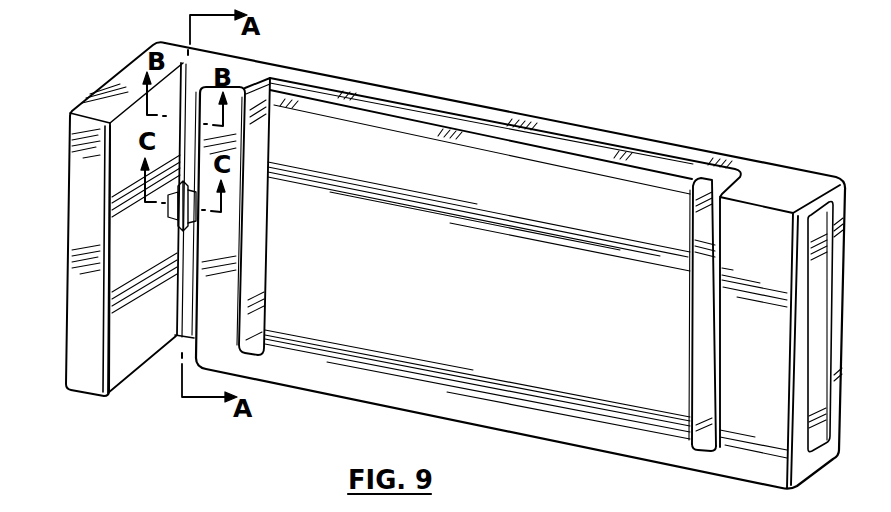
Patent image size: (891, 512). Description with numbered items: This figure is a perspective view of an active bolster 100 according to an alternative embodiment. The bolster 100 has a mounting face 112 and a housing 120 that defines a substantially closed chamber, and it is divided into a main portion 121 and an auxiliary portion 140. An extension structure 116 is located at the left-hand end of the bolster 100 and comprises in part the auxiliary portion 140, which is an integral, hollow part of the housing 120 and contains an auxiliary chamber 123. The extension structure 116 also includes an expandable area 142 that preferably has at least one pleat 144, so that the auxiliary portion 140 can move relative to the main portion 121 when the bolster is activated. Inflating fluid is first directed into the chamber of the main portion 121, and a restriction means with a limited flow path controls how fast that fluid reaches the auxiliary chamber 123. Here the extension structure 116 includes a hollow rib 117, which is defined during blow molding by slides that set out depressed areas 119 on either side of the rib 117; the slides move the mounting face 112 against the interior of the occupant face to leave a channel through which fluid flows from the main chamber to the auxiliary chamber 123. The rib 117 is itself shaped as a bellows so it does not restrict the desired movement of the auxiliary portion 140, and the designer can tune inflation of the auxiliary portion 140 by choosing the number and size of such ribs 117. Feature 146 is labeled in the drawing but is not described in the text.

The bolster 100 is at (567, 77).
The mounting face 112 is at (509, 314).
The extension structure 116 is at (165, 288).
The hollow rib 117 is at (193, 222).
The depressed areas 119 is at (194, 136).
The housing 120 is at (592, 449).
The main portion 121 is at (440, 97).
The auxiliary chamber 123 is at (88, 342).
The auxiliary portion 140 is at (118, 72).
The expandable area 142 is at (162, 238).
The pleat 144 is at (204, 77).
The slot opening 146 is at (126, 200).